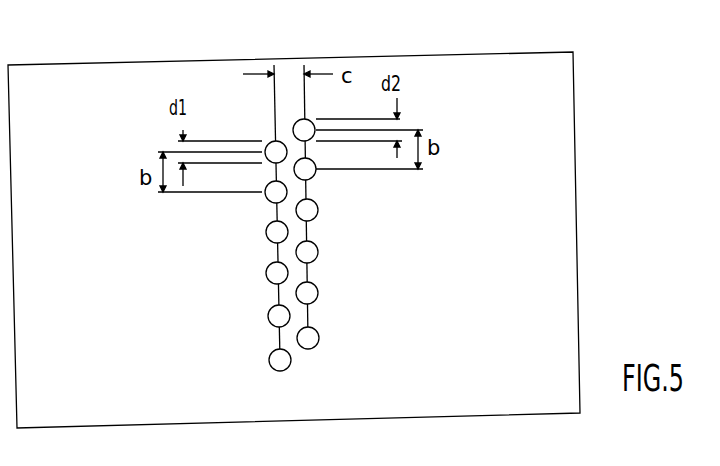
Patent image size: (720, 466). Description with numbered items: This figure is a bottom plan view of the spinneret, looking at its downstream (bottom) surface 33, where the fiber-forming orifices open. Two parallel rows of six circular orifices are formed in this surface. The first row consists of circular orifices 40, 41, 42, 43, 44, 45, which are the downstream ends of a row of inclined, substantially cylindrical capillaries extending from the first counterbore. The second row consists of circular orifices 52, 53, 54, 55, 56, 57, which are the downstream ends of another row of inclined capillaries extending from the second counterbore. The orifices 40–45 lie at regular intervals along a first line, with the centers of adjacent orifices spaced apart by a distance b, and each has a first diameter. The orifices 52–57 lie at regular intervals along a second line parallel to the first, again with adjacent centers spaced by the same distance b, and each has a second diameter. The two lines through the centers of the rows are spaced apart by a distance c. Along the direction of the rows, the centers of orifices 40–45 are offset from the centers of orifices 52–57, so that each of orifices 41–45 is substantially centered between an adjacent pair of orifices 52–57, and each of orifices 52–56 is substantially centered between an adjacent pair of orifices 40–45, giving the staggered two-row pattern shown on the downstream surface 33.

The downstream surface 33 is at (526, 80).
The circular orifice 40 is at (272, 368).
The circular orifice 41 is at (271, 324).
The circular orifice 42 is at (269, 281).
The circular orifice 43 is at (269, 240).
The circular orifice 44 is at (268, 200).
The circular orifice 45 is at (272, 141).
The circular orifice 52 is at (316, 346).
The circular orifice 53 is at (316, 300).
The circular orifice 54 is at (315, 258).
The circular orifice 55 is at (315, 216).
The circular orifice 56 is at (315, 176).
The circular orifice 57 is at (309, 122).